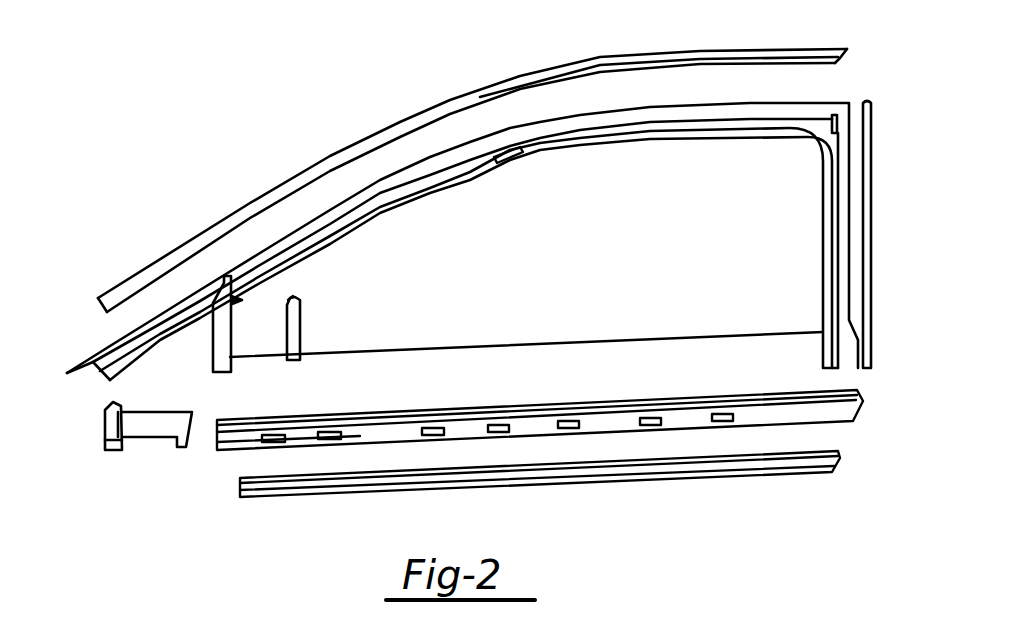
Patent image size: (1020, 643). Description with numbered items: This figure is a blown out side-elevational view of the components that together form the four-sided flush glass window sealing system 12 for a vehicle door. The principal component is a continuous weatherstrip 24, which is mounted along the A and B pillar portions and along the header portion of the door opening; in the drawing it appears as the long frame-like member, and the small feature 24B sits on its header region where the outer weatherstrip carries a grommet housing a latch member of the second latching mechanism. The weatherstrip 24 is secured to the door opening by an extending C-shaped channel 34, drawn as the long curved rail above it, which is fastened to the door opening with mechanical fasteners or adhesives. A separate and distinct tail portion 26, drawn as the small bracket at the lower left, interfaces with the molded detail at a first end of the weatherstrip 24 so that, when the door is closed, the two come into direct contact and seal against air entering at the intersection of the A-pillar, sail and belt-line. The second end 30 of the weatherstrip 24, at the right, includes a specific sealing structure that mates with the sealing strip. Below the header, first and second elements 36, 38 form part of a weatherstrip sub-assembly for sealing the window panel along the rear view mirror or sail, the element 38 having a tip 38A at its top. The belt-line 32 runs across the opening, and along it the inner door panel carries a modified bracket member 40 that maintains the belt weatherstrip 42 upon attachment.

The flush glass window sealing system 12 is at (331, 136).
The continuous weatherstrip 24 is at (398, 200).
The clip on window frame 24B is at (524, 150).
The tail portion 26 is at (153, 430).
The second end 30 is at (842, 369).
The belt-line 32 is at (539, 344).
The C-shaped channel 34 is at (650, 58).
The first element 36 is at (223, 329).
The second element 38 is at (297, 330).
The post tip 38A is at (289, 298).
The bracket member 40 is at (565, 476).
The belt weatherstrip 42 is at (632, 401).